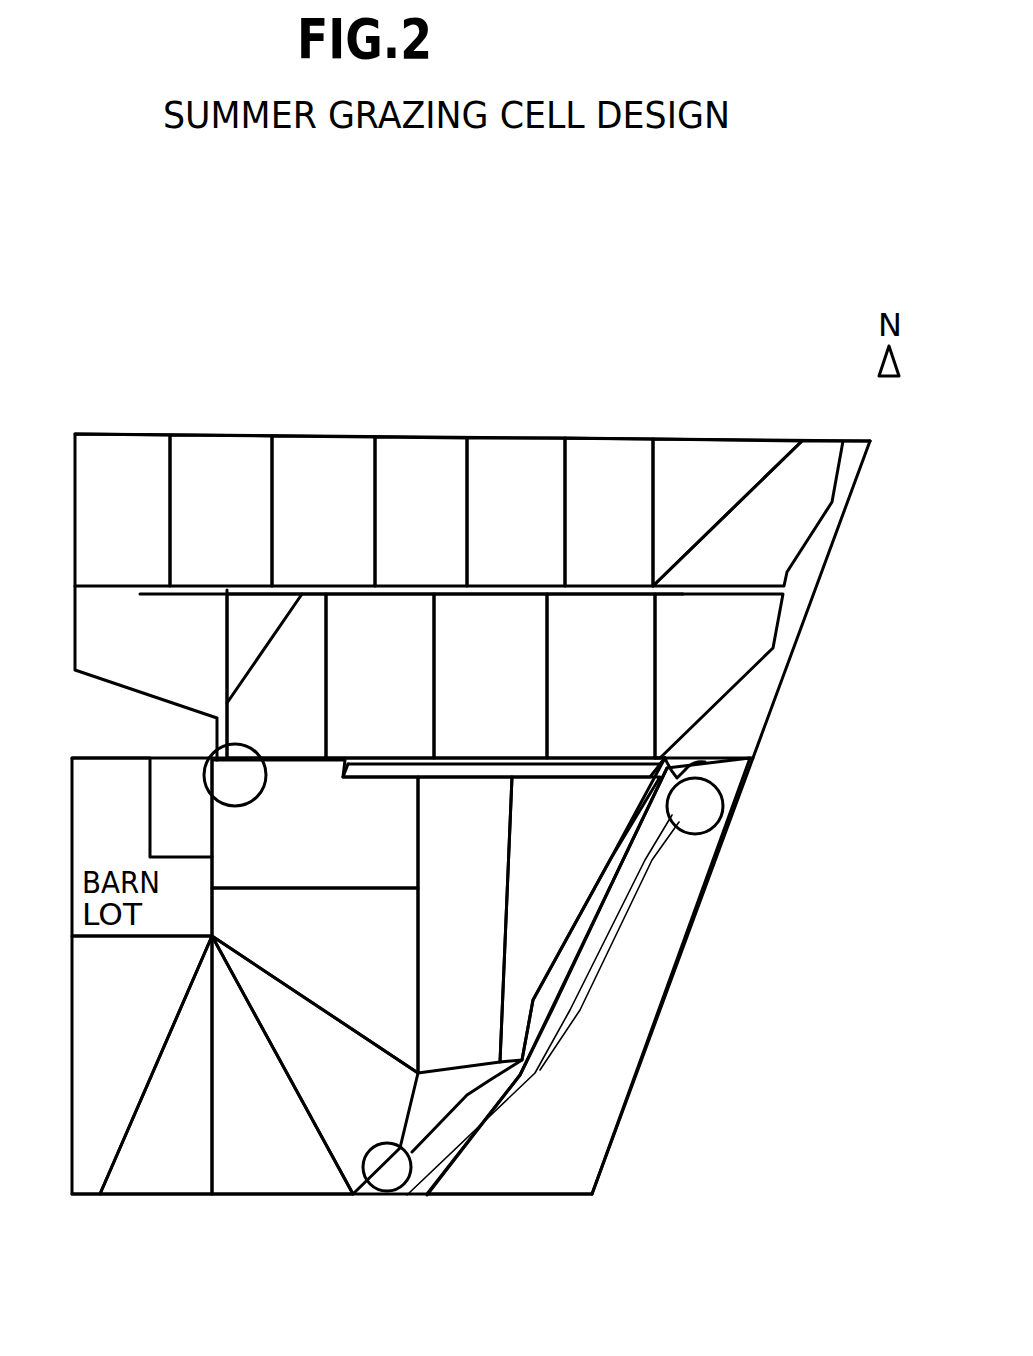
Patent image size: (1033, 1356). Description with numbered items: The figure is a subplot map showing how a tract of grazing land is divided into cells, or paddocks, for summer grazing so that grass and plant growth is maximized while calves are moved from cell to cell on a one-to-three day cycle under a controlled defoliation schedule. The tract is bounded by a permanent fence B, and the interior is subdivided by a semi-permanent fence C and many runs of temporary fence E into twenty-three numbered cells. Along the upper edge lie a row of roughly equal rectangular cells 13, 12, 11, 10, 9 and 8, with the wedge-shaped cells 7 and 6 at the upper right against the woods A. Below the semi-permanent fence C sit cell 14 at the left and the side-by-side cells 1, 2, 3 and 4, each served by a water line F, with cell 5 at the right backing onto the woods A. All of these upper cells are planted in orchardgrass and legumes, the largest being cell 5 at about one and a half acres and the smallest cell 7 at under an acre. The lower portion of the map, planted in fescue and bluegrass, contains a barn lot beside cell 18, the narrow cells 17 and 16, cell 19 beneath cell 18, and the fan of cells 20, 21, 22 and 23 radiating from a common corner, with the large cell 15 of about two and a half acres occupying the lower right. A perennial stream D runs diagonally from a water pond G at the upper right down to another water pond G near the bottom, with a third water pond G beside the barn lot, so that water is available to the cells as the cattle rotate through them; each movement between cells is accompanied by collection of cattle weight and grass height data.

The summer cell 1 is at (276, 676).
The summer cell 2 is at (380, 676).
The summer cell 3 is at (490, 676).
The summer cell 4 is at (601, 676).
The summer cell 5 is at (719, 676).
The summer cell 6 is at (761, 513).
The summer cell 7 is at (727, 512).
The summer cell 8 is at (609, 512).
The summer cell 9 is at (516, 512).
The summer cell 10 is at (421, 511).
The summer cell 11 is at (323, 511).
The summer cell 12 is at (221, 510).
The summer cell 13 is at (122, 510).
The summer cell 14 is at (151, 673).
The summer cell 15 is at (588, 976).
The summer cell 16 is at (580, 919).
The summer cell 17 is at (465, 925).
The summer cell 18 is at (315, 824).
The summer cell 19 is at (315, 980).
The summer cell 20 is at (315, 1065).
The summer cell 21 is at (282, 1065).
The summer cell 22 is at (156, 1065).
The summer cell 23 is at (142, 1065).
The woods A is at (835, 625).
The permanent fence B is at (500, 1221).
The semi-permanent fence C is at (712, 585).
The perennial stream D is at (464, 1097).
The temporary fence E is at (118, 1100).
The water line F is at (182, 605).
The water pond G is at (509, 777).